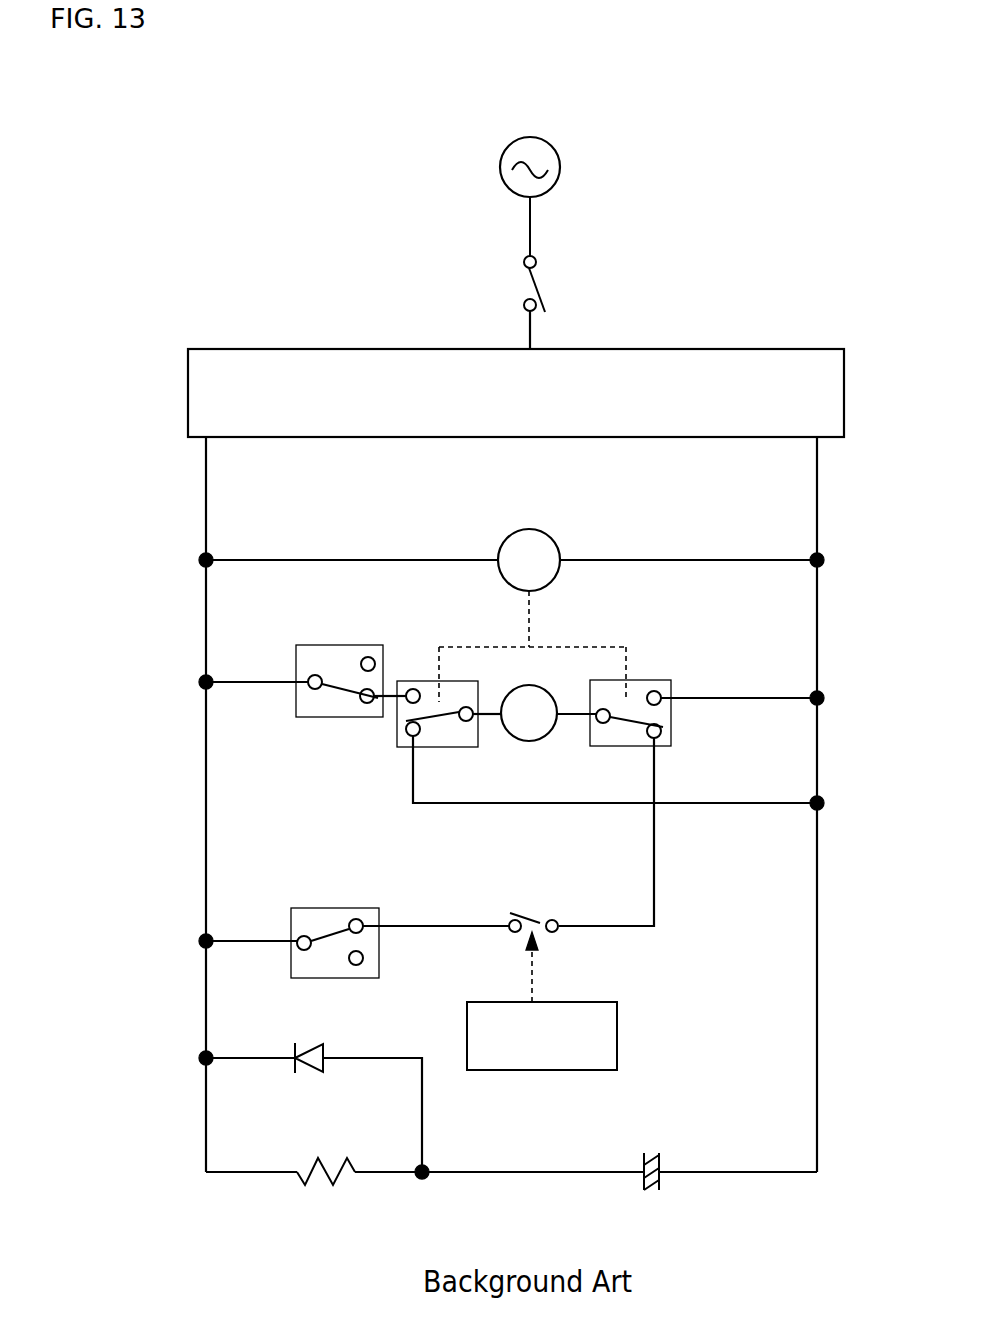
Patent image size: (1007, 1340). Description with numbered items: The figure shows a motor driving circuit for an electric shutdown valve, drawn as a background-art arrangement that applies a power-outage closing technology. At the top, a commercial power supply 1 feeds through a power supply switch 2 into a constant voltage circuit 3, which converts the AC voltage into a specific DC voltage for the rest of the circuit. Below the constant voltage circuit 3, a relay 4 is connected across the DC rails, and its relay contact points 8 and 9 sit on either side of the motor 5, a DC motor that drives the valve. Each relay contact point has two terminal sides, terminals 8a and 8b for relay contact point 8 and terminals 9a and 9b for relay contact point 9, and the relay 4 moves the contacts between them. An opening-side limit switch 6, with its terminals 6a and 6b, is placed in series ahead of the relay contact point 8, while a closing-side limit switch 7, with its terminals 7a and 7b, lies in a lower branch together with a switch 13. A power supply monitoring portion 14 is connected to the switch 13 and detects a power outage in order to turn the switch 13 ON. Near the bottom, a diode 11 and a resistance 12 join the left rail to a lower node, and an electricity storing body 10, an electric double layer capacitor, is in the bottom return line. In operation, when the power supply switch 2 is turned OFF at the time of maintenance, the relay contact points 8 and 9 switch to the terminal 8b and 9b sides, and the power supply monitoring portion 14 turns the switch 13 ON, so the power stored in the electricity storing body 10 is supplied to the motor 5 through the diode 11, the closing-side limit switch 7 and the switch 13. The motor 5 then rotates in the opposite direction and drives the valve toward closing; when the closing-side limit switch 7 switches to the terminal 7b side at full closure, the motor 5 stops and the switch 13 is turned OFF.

The commercial power supply 1 is at (552, 164).
The power supply switch 2 is at (548, 290).
The constant voltage circuit 3 is at (845, 382).
The relay 4 is at (540, 550).
The motor 5 is at (545, 705).
The opening-side limit switch 6 is at (355, 645).
The terminal of opening-side limit switch 6a is at (362, 702).
The terminal of opening-side limit switch 6b is at (375, 661).
The closing-side limit switch 7 is at (340, 908).
The terminal of closing-side limit switch 7a is at (362, 921).
The terminal of closing-side limit switch 7b is at (363, 962).
The relay contact point 8 is at (408, 736).
The terminal of relay contact point 8a is at (418, 689).
The terminal of relay contact point 8b is at (420, 734).
The relay contact point 9 is at (660, 680).
The terminal of relay contact point 9a is at (660, 693).
The terminal of relay contact point 9b is at (661, 735).
The electricity storing body 10 is at (660, 1155).
The diode 11 is at (326, 1048).
The resistance 12 is at (312, 1180).
The switch 13 is at (536, 912).
The power supply monitoring portion 14 is at (618, 1020).